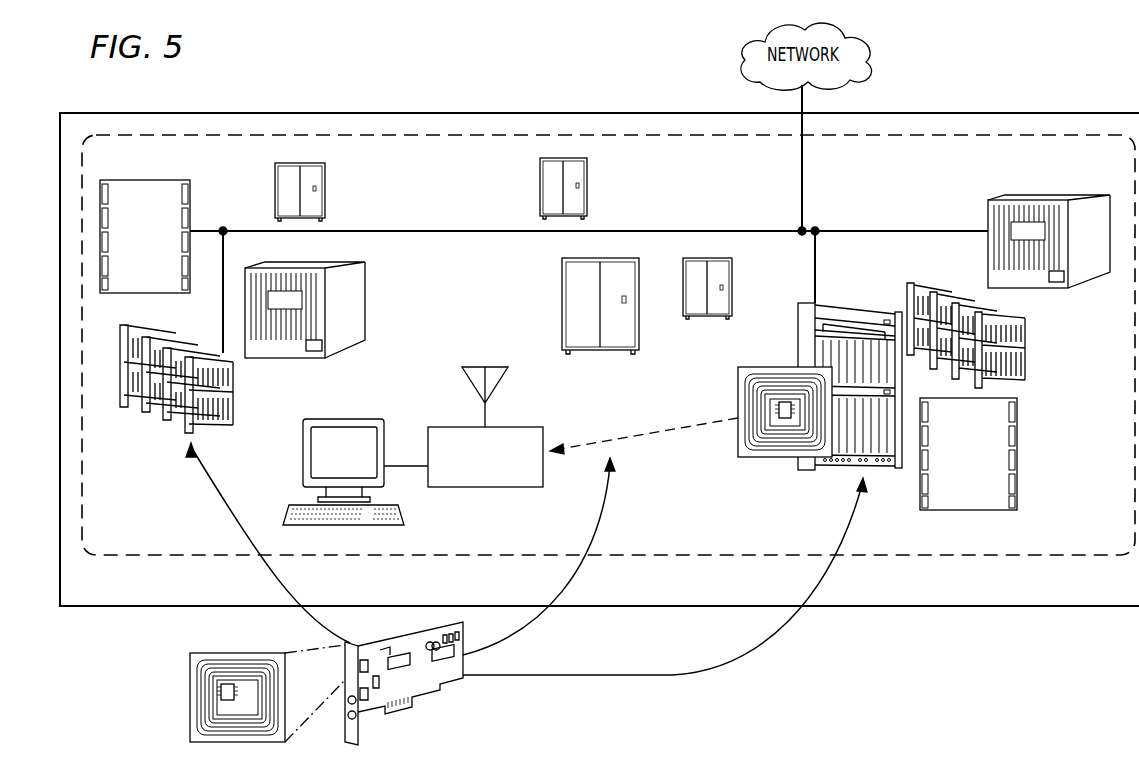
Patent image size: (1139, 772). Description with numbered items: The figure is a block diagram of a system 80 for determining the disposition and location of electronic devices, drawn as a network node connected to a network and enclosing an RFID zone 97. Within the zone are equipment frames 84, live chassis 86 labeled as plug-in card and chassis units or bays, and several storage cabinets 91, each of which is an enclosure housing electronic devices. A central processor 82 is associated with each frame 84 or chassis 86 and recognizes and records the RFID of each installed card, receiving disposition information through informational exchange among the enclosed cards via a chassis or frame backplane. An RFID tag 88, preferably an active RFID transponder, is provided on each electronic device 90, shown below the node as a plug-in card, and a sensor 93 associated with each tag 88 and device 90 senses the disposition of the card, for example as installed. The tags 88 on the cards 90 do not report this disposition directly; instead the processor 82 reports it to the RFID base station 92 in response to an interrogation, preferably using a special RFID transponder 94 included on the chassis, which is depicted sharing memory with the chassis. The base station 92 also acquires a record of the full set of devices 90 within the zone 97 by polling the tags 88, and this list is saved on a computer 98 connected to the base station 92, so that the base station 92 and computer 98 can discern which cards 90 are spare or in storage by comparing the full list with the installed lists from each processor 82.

The system 80 is at (266, 103).
The central processor 82 is at (1015, 448).
The frame 84 is at (150, 412).
The chassis 86 is at (188, 180).
The RFID tag 88 is at (212, 684).
The electronic device 90 is at (432, 690).
The storage cabinet 91 is at (326, 186).
The RFID base station 92 is at (518, 427).
The sensor 93 is at (218, 689).
The RFID transponder 94 is at (738, 388).
The zone 97 is at (1050, 556).
The computer 98 is at (346, 419).